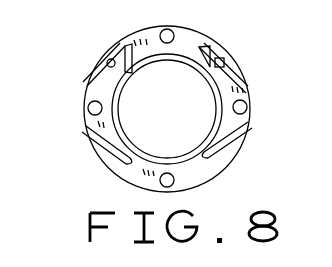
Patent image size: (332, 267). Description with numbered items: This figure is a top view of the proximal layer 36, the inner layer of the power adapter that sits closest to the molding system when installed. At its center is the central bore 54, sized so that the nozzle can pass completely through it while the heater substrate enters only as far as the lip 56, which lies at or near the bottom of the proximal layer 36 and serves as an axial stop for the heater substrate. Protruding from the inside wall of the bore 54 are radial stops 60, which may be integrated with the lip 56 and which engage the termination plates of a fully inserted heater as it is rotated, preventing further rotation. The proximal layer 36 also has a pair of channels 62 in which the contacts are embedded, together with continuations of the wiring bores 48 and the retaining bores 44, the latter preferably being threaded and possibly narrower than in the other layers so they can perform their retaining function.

The proximal layer 36 is at (66, 91).
The retaining bores 44 is at (171, 29).
The wiring bores 48 is at (110, 60).
The central bore 54 is at (179, 102).
The lip 56 is at (153, 155).
The radial stops 60 is at (121, 72).
The channels 62 is at (246, 89).